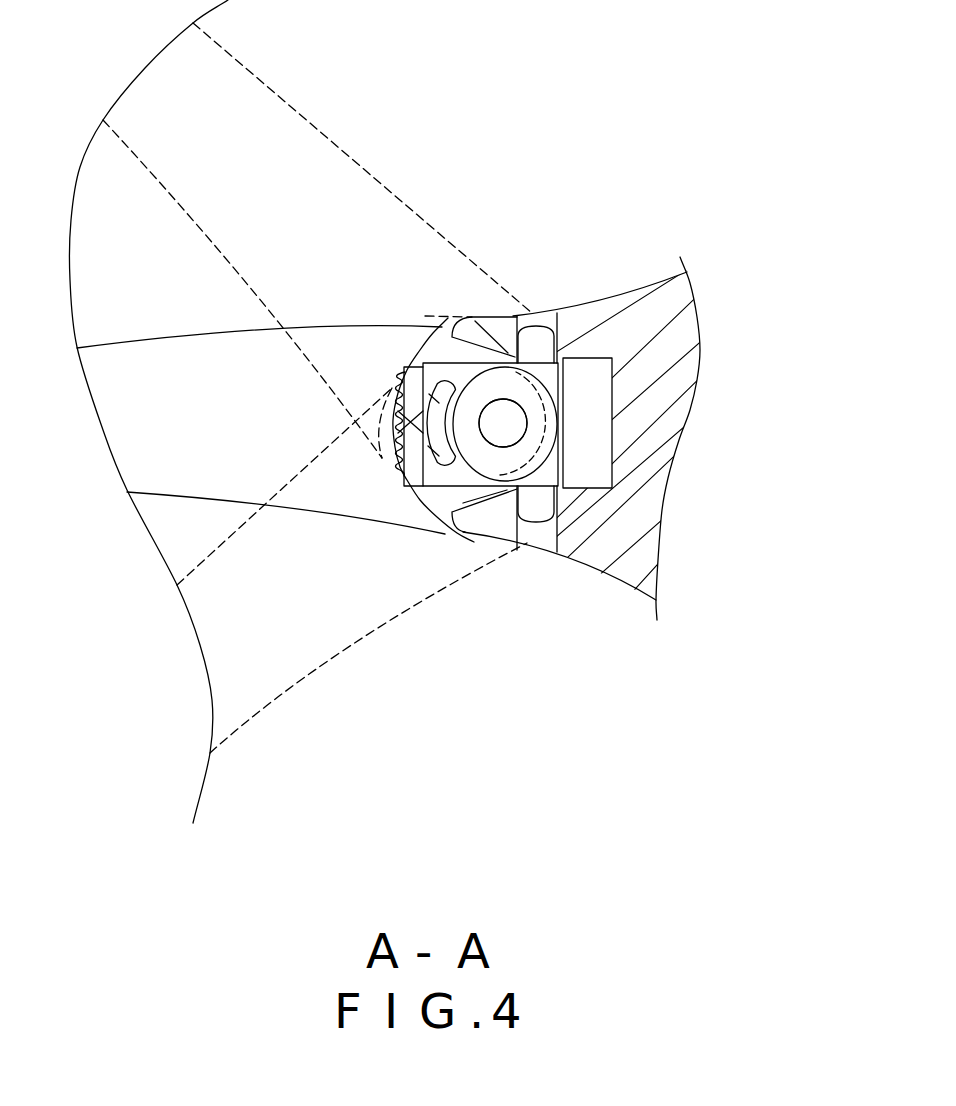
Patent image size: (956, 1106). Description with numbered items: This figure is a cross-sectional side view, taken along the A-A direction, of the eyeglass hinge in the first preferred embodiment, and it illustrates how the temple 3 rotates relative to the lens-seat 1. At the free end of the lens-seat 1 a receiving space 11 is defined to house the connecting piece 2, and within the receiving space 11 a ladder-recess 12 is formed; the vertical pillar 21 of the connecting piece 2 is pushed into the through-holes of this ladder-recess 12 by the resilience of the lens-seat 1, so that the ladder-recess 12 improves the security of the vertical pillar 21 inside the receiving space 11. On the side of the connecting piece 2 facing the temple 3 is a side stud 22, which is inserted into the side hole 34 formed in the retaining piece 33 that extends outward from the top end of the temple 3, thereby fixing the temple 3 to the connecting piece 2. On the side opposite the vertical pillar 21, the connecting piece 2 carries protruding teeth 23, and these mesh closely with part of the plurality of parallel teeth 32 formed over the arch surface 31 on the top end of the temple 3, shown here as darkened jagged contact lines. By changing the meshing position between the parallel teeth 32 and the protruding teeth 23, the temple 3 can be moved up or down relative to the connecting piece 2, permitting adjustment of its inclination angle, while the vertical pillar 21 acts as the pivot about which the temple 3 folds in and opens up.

The lens-seat 1 is at (588, 357).
The receiving space 11 is at (597, 428).
The ladder-recess 12 is at (538, 320).
The connecting piece 2 is at (553, 365).
The vertical pillar 21 is at (527, 343).
The side stud 22 is at (507, 430).
The protruding teeth 23 is at (391, 420).
The temple 3 is at (245, 332).
The arch surface 31 is at (435, 345).
The parallel teeth 32 is at (391, 400).
The retaining piece 33 is at (462, 470).
The side hole 34 is at (490, 450).